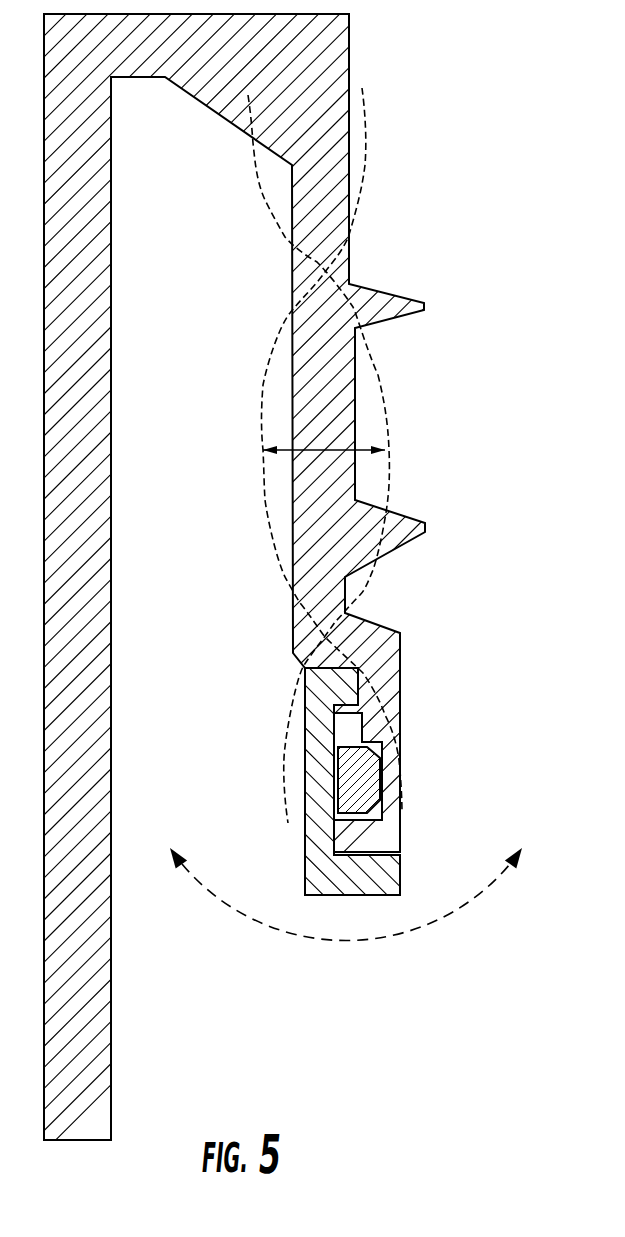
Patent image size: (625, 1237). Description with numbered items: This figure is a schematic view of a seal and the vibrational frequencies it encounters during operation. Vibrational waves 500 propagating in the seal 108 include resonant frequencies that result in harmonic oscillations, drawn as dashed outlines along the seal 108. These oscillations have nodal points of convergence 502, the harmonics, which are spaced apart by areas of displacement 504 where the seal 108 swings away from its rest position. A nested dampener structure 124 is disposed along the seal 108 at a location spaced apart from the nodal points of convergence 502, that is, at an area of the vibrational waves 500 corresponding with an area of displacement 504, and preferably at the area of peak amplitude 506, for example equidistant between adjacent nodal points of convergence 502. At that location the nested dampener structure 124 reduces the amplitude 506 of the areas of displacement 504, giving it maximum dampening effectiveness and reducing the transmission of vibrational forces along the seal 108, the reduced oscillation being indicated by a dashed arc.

The seal 108 is at (292, 272).
The nested dampener structure 124 is at (385, 782).
The vibrational waves 500 is at (363, 182).
The nodal points of convergence 502 is at (327, 270).
The areas of displacement 504 is at (387, 480).
The amplitude 506 is at (315, 453).